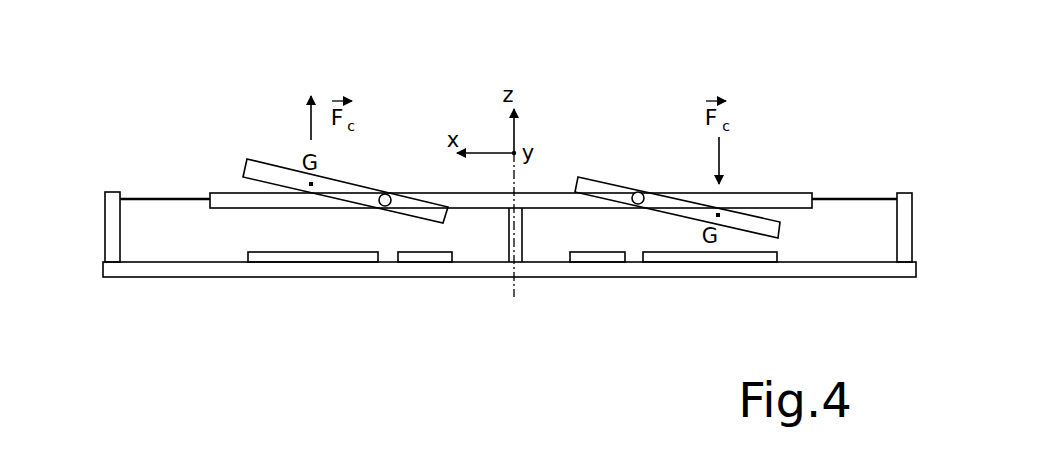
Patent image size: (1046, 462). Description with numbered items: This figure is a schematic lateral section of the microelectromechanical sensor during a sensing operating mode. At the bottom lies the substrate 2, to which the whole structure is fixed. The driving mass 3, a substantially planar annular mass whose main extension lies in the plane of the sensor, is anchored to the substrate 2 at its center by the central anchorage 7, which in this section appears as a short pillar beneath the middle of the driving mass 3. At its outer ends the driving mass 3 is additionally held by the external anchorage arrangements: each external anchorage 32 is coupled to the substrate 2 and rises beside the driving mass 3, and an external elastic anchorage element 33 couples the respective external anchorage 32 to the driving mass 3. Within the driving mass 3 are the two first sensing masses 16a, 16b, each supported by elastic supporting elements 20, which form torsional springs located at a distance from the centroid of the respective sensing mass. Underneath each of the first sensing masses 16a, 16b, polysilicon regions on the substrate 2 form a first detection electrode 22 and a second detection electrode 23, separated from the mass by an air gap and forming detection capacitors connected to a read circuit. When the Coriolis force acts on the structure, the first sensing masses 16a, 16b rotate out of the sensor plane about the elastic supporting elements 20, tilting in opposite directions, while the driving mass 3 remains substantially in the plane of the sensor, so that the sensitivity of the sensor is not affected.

The substrate 2 is at (175, 270).
The driving mass 3 is at (228, 200).
The central anchorage 7 is at (523, 237).
The first sensing mass 16a is at (262, 165).
The first sensing mass 16b is at (597, 181).
The elastic supporting element 20 is at (385, 193).
The first detection electrode 22 is at (318, 260).
The second detection electrode 23 is at (425, 260).
The external anchorage 32 is at (105, 233).
The external elastic anchorage element 33 is at (167, 199).